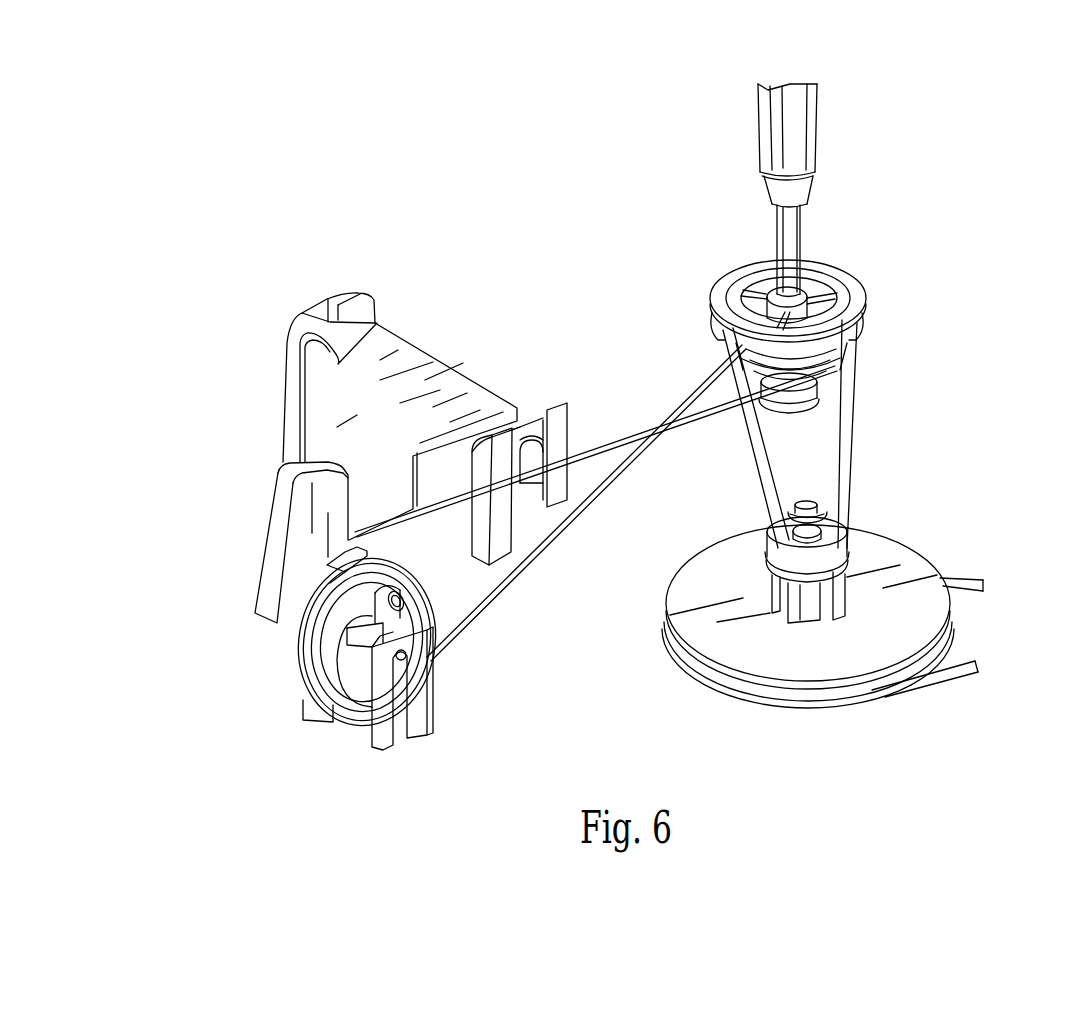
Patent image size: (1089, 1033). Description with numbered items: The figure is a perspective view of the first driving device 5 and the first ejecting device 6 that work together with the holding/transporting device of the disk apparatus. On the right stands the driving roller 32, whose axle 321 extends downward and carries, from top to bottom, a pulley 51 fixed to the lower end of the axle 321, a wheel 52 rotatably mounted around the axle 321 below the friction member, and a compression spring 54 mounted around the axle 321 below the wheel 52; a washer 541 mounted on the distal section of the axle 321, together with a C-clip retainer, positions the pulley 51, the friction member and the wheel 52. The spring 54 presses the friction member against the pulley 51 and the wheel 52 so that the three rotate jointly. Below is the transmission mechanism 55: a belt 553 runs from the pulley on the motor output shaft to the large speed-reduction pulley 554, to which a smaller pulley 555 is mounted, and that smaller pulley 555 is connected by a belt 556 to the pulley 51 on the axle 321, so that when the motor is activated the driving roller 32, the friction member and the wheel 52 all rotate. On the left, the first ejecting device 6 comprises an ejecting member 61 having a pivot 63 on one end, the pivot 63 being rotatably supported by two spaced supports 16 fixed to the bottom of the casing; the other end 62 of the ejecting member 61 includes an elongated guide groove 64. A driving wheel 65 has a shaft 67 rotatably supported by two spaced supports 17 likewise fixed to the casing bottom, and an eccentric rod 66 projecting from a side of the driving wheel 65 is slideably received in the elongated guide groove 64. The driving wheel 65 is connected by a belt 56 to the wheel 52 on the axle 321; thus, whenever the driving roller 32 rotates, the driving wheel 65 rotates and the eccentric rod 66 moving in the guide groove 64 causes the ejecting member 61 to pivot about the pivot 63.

The first driving device 5 is at (742, 224).
The driving roller 32 is at (771, 156).
The axle 321 is at (793, 238).
The pulley 51 is at (858, 298).
The wheel 52 is at (832, 366).
The compression spring 54 is at (818, 389).
The washer 541 is at (808, 408).
The transmission mechanism 55 is at (877, 499).
The belt 553 is at (955, 676).
The speed-reduction pulley 554 is at (905, 556).
The pulley 555 is at (775, 545).
The belt 556 is at (750, 455).
The belt 56 is at (655, 428).
The first ejecting device 6 is at (268, 468).
The supports 16 is at (299, 334).
The supports 17 is at (420, 695).
The ejecting member 61 is at (440, 376).
The other end 62 is at (283, 487).
The pivot 63 is at (538, 437).
The elongated guide groove 64 is at (357, 555).
The driving wheel 65 is at (333, 693).
The eccentric rod 66 is at (303, 612).
The shaft 67 is at (406, 660).